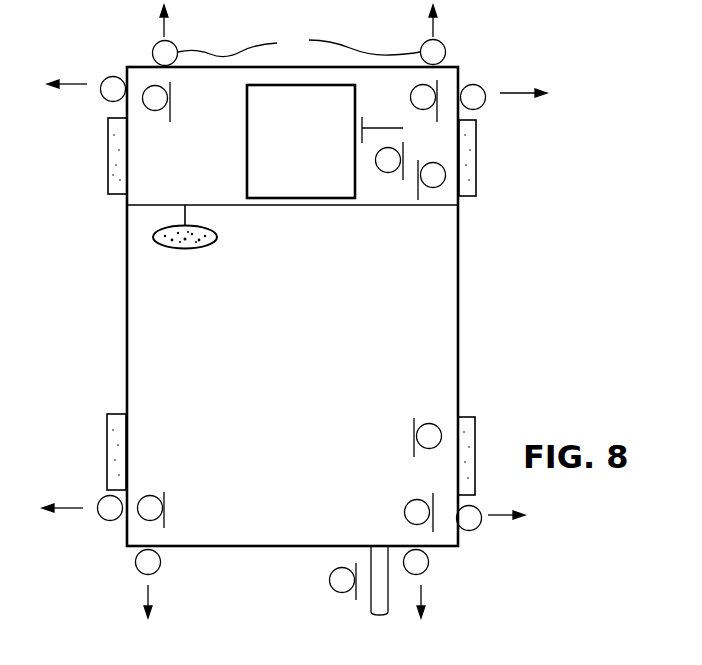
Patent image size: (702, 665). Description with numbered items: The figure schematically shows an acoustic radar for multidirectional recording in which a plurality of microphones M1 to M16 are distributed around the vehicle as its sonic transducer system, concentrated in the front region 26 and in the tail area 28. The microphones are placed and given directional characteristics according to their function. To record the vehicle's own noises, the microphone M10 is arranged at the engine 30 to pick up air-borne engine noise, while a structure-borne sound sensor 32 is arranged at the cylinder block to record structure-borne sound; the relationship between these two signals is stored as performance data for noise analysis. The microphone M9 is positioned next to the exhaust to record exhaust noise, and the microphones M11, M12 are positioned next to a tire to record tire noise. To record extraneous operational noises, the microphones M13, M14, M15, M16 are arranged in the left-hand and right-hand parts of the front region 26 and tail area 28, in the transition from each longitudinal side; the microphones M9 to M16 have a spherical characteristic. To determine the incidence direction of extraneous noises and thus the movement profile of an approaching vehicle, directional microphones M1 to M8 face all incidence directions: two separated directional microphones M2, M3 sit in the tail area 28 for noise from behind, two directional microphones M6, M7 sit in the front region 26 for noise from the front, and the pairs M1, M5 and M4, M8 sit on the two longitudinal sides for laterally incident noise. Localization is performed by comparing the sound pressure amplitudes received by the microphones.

The directional microphone M1 is at (105, 520).
The directional microphone M2 is at (160, 560).
The directional microphone M3 is at (427, 571).
The directional microphone M4 is at (478, 528).
The directional microphone M5 is at (105, 99).
The directional microphone M6 is at (153, 48).
The directional microphone M7 is at (445, 52).
The directional microphone M8 is at (484, 104).
The microphone M9 is at (330, 582).
The microphone M10 is at (386, 172).
The microphone M11 is at (440, 186).
The microphone M12 is at (414, 441).
The microphone M13 is at (166, 508).
The microphone M14 is at (405, 510).
The microphone M15 is at (411, 100).
The microphone M16 is at (170, 100).
The front region 26 is at (299, 43).
The tail area 28 is at (155, 575).
The engine 30 is at (247, 164).
The structure-borne sound sensor 32 is at (392, 133).